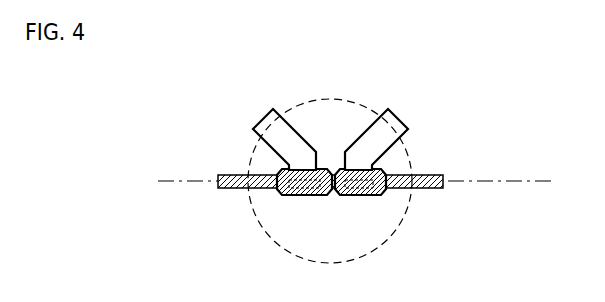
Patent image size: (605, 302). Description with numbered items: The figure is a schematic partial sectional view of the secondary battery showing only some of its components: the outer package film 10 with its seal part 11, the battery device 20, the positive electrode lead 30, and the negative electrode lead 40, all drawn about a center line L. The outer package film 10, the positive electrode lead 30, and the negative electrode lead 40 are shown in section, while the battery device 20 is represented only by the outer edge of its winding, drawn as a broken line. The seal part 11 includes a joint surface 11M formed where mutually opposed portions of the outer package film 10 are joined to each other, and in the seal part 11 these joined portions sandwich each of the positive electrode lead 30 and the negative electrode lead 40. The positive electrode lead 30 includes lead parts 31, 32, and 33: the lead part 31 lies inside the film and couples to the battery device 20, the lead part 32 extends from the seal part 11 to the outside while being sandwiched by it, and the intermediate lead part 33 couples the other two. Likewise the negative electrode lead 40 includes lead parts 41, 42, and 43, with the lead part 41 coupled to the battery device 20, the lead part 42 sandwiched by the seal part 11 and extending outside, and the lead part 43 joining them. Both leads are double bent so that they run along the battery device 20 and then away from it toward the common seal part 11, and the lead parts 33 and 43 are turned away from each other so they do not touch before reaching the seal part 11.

The outer package film 10 is at (314, 217).
The seal part 11 is at (238, 188).
The joint surface 11M is at (333, 172).
The battery device 20 is at (404, 216).
The positive electrode lead 30 is at (245, 108).
The lead part 31 is at (245, 136).
The lead part 32 is at (298, 195).
The lead part 33 is at (262, 152).
The negative electrode lead 40 is at (416, 108).
The lead part 41 is at (416, 136).
The lead part 42 is at (352, 195).
The lead part 43 is at (382, 144).
The center line L is at (540, 174).